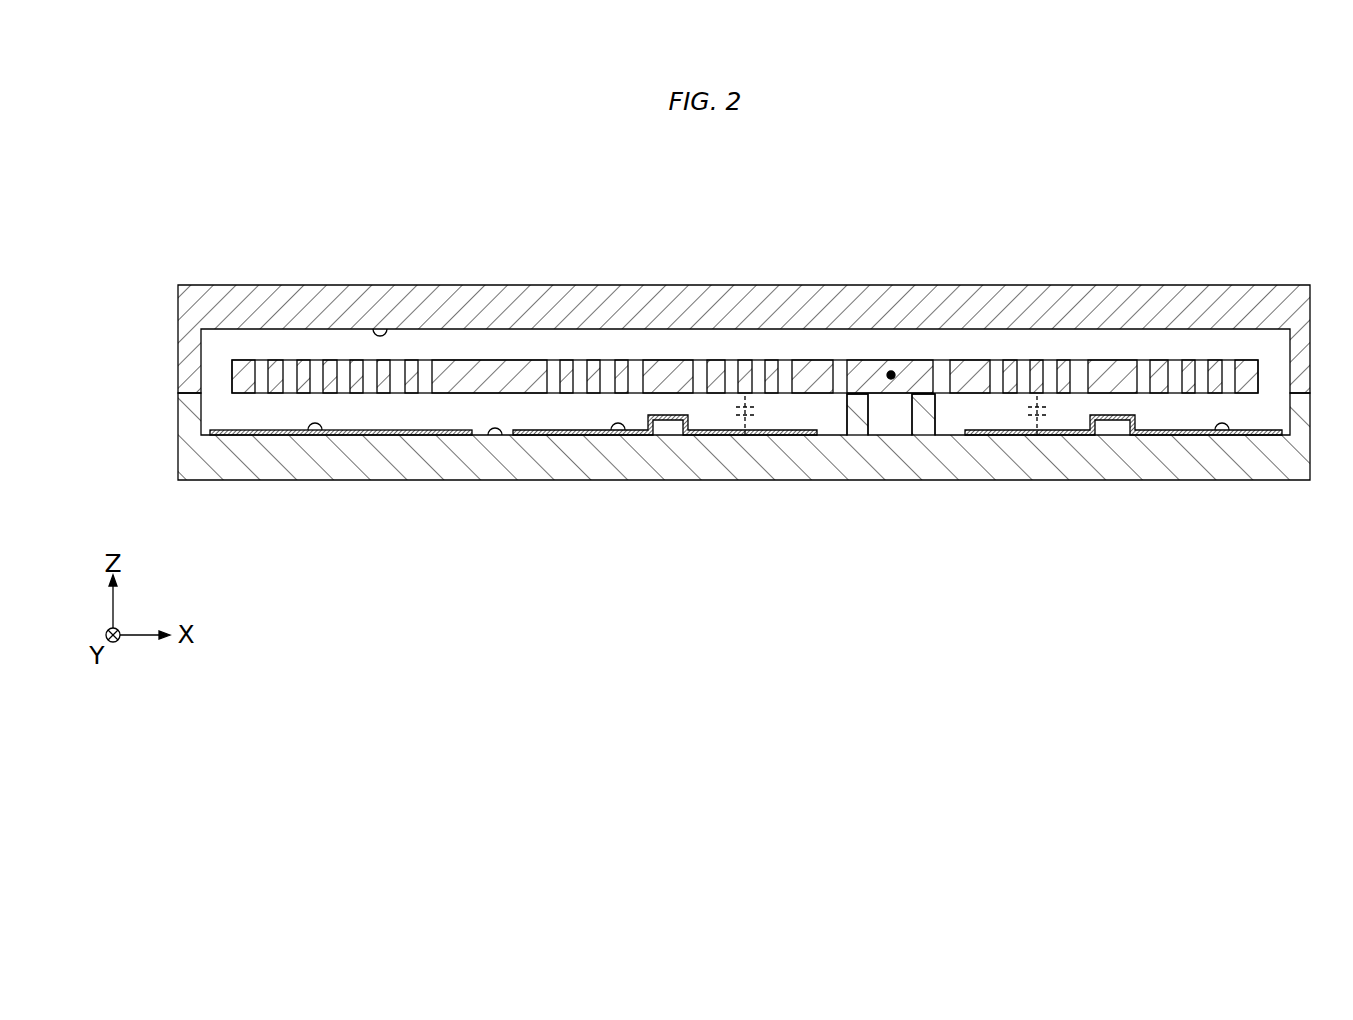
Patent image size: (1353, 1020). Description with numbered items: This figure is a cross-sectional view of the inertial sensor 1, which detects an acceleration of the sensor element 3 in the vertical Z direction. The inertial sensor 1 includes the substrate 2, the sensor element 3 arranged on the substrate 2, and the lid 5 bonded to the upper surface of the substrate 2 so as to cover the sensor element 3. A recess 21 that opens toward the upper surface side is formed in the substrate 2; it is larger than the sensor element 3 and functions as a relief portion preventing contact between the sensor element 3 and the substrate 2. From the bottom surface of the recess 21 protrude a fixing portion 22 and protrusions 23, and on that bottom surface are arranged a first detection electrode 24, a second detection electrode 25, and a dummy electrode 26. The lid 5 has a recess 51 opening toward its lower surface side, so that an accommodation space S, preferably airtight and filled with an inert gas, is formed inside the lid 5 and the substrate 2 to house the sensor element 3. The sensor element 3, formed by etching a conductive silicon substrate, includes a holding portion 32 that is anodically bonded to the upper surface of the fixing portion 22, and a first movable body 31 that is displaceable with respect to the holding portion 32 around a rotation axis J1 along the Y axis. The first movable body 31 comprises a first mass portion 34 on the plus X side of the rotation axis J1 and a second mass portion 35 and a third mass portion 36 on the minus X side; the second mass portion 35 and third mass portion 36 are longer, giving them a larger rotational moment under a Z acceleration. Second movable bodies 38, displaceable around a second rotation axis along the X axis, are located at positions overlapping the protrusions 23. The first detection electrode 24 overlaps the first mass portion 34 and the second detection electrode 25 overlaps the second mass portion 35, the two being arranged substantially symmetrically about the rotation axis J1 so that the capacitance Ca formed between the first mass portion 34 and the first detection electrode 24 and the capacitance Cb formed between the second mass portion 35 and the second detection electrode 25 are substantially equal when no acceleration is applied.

The inertial sensor 1 is at (1240, 187).
The substrate 2 is at (995, 480).
The sensor element 3 is at (822, 358).
The lid 5 is at (972, 286).
The recess 21 is at (490, 436).
The fixing portion 22 is at (862, 425).
The protrusion 23 is at (672, 432).
The first detection electrode 24 is at (1221, 436).
The second detection electrode 25 is at (615, 436).
The dummy electrode 26 is at (308, 436).
The first movable body 31 is at (1243, 360).
The holding portion 32 is at (858, 360).
The first mass portion 34 is at (1033, 360).
The second mass portion 35 is at (768, 360).
The third mass portion 36 is at (325, 360).
The second movable body 38 is at (660, 360).
The recess 51 is at (380, 329).
The accommodation space S is at (282, 350).
The rotation axis J1 is at (891, 371).
The capacitance Ca is at (1018, 415).
The capacitance Cb is at (763, 415).